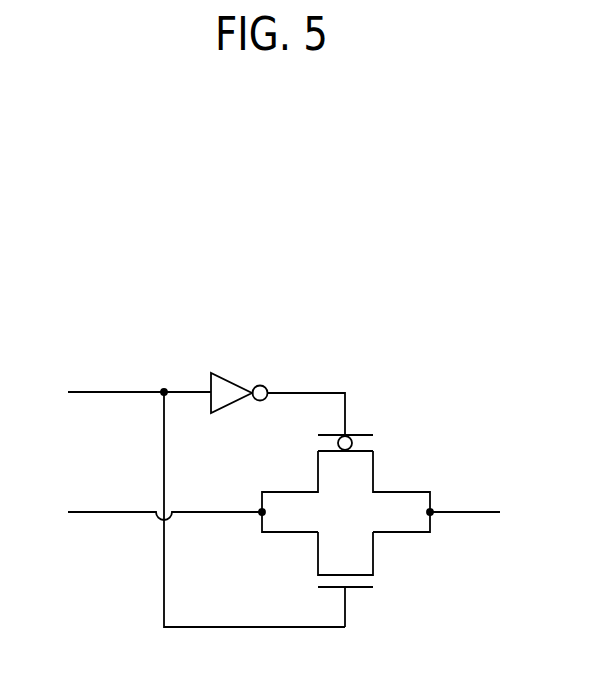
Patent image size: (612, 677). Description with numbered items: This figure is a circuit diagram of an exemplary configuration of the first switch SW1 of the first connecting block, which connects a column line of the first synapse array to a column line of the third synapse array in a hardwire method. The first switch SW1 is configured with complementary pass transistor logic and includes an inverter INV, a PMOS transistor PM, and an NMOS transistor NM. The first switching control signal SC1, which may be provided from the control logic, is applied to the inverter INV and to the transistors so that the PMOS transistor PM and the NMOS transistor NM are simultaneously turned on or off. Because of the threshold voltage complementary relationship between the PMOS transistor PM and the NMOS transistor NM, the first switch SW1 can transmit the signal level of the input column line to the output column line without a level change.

The first switch SW1 is at (477, 339).
The first switching control signal SC1 is at (181, 503).
The inverter INV is at (278, 389).
The PMOS transistor PM is at (346, 479).
The NMOS transistor NM is at (372, 579).